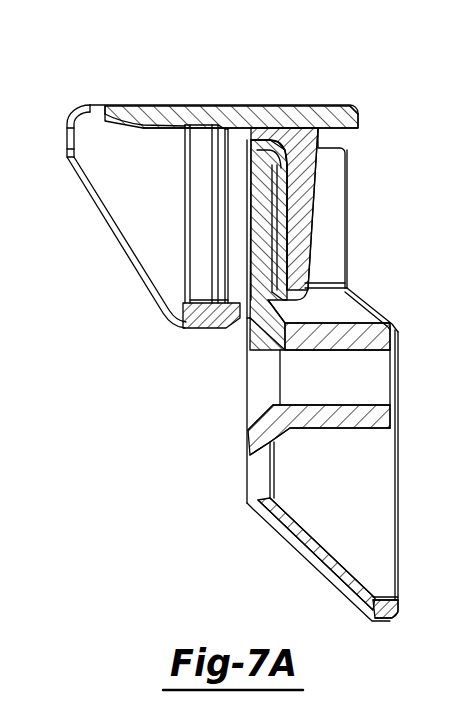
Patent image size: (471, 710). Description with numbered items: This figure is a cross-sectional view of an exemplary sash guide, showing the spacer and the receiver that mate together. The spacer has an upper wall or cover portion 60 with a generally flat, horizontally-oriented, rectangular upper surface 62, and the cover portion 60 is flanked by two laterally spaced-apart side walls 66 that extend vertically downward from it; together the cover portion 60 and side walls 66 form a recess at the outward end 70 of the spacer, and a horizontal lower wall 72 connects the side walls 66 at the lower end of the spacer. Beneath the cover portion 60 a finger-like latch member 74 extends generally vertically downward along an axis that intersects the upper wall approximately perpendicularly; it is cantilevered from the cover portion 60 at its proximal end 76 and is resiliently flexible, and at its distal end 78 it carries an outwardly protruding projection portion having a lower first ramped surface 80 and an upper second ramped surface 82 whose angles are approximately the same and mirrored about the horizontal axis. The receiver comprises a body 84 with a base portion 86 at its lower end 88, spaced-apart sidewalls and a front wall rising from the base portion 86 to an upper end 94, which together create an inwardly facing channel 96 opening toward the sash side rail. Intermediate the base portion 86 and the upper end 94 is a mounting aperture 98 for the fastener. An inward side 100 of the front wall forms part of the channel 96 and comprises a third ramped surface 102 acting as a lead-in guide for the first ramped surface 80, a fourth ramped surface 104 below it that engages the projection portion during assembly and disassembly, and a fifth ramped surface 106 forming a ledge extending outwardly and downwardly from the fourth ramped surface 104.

The cover portion 60 is at (270, 282).
The upper surface 62 is at (198, 108).
The side walls 66 is at (115, 184).
The outward end 70 is at (139, 191).
The lower wall 72 is at (217, 323).
The latch member 74 is at (348, 315).
The proximal end 76 is at (332, 135).
The distal end 78 is at (324, 276).
The first ramped surface 80 is at (272, 300).
The second ramped surface 82 is at (246, 253).
The body 84 is at (258, 463).
The base portion 86 is at (374, 608).
The lower end 88 is at (313, 468).
The upper end 94 is at (216, 156).
The channel 96 is at (272, 480).
The mounting aperture 98 is at (310, 404).
The inward side 100 is at (402, 418).
The third ramped surface 102 is at (328, 108).
The fourth ramped surface 104 is at (287, 182).
The fifth ramped surface 106 is at (305, 274).